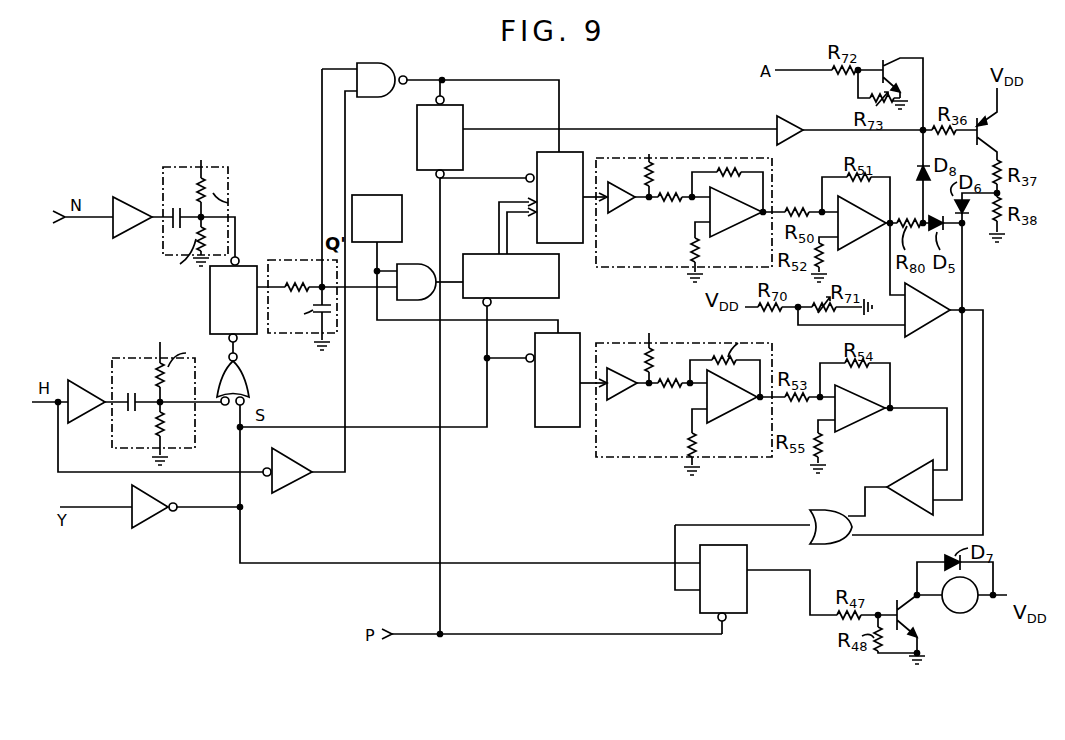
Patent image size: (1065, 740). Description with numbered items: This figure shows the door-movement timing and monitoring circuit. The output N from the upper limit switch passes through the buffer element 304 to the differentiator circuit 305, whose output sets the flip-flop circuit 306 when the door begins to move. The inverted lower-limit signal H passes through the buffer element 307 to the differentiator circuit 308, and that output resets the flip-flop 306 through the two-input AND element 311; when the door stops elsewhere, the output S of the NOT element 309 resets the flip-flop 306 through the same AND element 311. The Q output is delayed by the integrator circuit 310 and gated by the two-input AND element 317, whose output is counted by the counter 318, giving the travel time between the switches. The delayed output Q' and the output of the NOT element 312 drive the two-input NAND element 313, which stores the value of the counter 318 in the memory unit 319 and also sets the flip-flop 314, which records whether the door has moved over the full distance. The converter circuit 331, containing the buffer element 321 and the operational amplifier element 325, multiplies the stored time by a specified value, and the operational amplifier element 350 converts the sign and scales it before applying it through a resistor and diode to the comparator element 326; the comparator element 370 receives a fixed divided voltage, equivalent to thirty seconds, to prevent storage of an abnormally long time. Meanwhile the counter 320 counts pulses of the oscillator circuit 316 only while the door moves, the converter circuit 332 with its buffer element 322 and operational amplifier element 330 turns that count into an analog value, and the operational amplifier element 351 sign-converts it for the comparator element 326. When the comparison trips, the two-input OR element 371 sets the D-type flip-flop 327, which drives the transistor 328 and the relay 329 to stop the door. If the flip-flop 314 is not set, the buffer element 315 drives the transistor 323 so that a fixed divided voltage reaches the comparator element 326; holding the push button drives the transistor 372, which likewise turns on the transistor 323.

The buffer element 304 is at (128, 183).
The differentiator circuit 305 is at (229, 170).
The flip-flop circuit 306 is at (257, 266).
The buffer element 307 is at (85, 380).
The differentiator circuit 308 is at (145, 357).
The NOT element 309 is at (160, 517).
The integrator circuit 310 is at (284, 333).
The 2-input AND element 311 is at (250, 382).
The NOT element 312 is at (292, 484).
The 2-input NAND element 313 is at (386, 63).
The flip-flop 314 is at (465, 112).
The buffer element 315 is at (791, 118).
The oscillator circuit 316 is at (378, 195).
The 2-input AND element 317 is at (415, 300).
The counter 318 is at (559, 295).
The memory unit 319 is at (583, 153).
The counter 320 is at (555, 427).
The buffer element 321 is at (619, 206).
The buffer element 322 is at (624, 396).
The transistor 323 is at (997, 137).
The operational amplifier element 325 is at (734, 222).
The comparator element 326 is at (925, 460).
The D-type flip-flop 327 is at (740, 613).
The transistor 328 is at (916, 628).
The relay 329 is at (968, 612).
The operational amplifier element 330 is at (739, 416).
The converter circuit 331 is at (684, 218).
The converter circuit 332 is at (684, 405).
The operational amplifier element 350 is at (854, 236).
The operational amplifier element 351 is at (869, 424).
The comparator element 370 is at (930, 330).
The 2-input OR element 371 is at (833, 510).
The transistor 372 is at (905, 72).